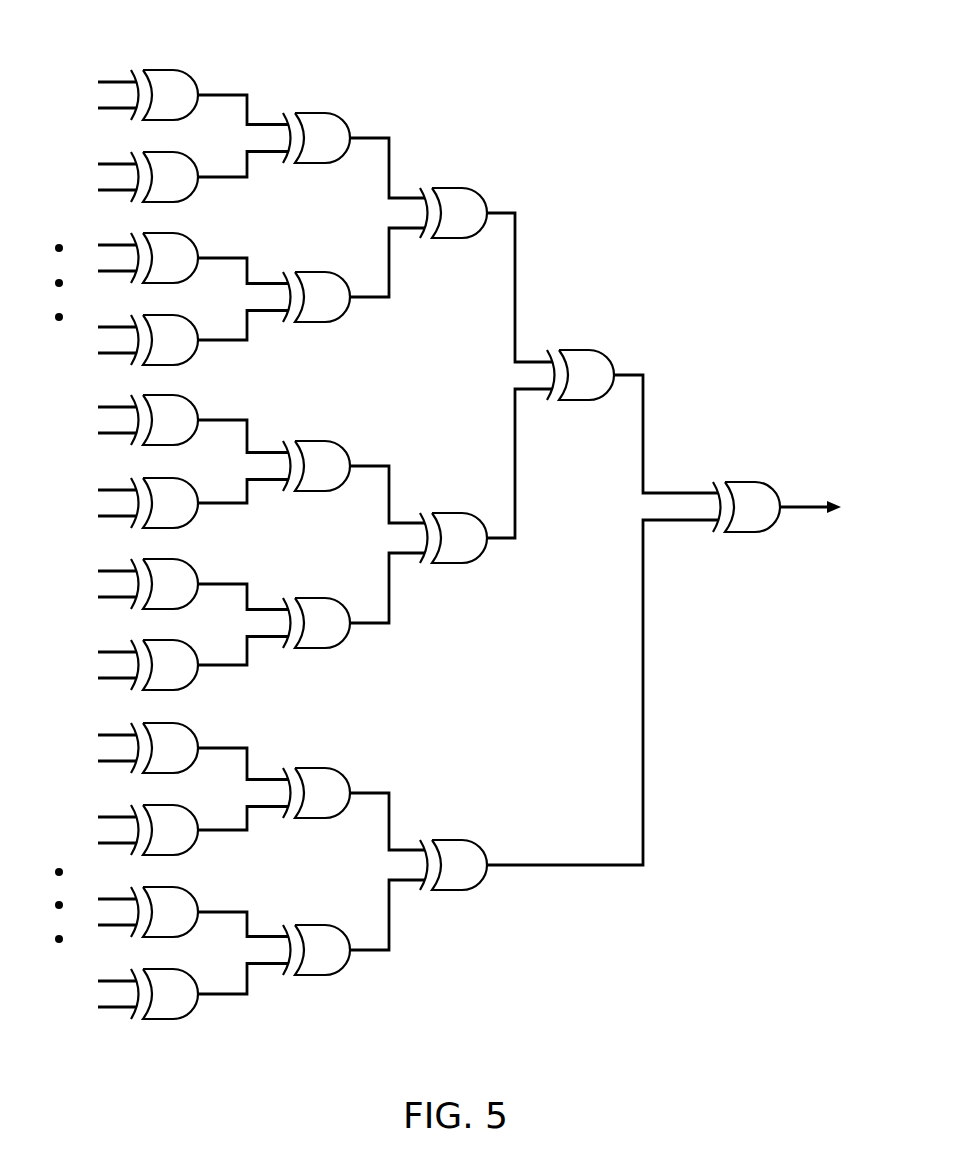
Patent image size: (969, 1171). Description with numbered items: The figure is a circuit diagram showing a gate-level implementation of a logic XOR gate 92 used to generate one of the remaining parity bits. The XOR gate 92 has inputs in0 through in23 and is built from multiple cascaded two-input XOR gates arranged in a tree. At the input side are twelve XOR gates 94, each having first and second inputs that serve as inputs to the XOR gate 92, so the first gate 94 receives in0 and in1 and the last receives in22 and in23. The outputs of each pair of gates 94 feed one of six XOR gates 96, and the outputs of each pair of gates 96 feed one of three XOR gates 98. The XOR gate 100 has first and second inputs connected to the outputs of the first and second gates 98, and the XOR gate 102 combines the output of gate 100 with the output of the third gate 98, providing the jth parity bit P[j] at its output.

The logic XOR gate 92 is at (711, 50).
The XOR gates 94 is at (198, 58).
The XOR gates 96 is at (316, 544).
The XOR gates 98 is at (461, 520).
The XOR gate 100 is at (578, 353).
The XOR gate 102 is at (743, 487).